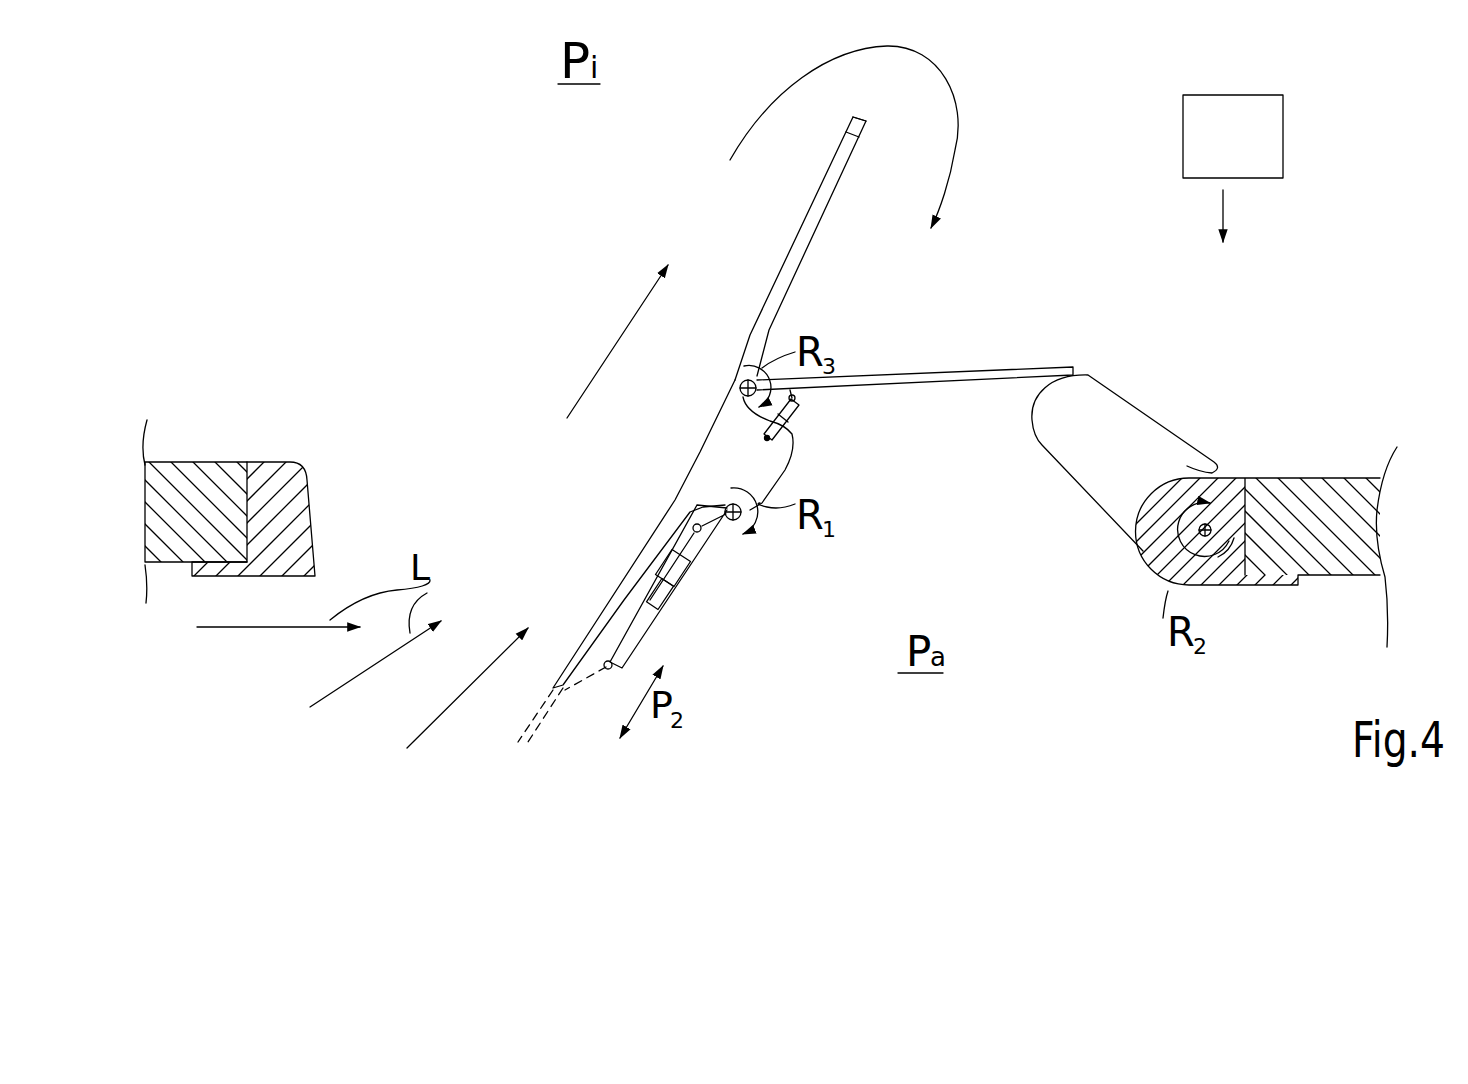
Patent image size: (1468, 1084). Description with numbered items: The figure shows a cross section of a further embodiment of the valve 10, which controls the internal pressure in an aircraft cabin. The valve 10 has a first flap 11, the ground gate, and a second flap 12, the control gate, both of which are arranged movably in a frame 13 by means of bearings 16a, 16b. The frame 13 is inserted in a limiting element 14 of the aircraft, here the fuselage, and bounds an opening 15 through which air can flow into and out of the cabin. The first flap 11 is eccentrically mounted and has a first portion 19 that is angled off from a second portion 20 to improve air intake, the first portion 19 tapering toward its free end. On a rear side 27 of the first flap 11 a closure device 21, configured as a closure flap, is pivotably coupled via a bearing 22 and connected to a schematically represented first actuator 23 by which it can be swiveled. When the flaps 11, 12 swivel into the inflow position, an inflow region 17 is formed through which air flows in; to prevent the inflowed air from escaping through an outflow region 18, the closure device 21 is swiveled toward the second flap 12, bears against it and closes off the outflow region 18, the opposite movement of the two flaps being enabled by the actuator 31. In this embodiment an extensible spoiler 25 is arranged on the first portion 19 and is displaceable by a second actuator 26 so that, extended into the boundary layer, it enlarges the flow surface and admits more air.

The valve 10 is at (1036, 306).
The first flap 11 is at (712, 412).
The second flap 12 is at (1160, 437).
The frame 13 is at (284, 470).
The limiting element 14 is at (203, 463).
The opening 15 is at (407, 467).
The bearing 16a is at (732, 522).
The bearing 16b is at (1247, 478).
The inflow region 17 is at (471, 501).
The outflow region 18 is at (944, 503).
The first portion 19 is at (625, 587).
The second portion 20 is at (777, 300).
The closure device 21 is at (901, 368).
The bearing 22 is at (740, 379).
The first actuator 23 is at (787, 417).
The extensible spoiler 25 is at (594, 634).
The second actuator 26 is at (675, 603).
The rear side 27 is at (806, 243).
The actuator 31 is at (1233, 168).